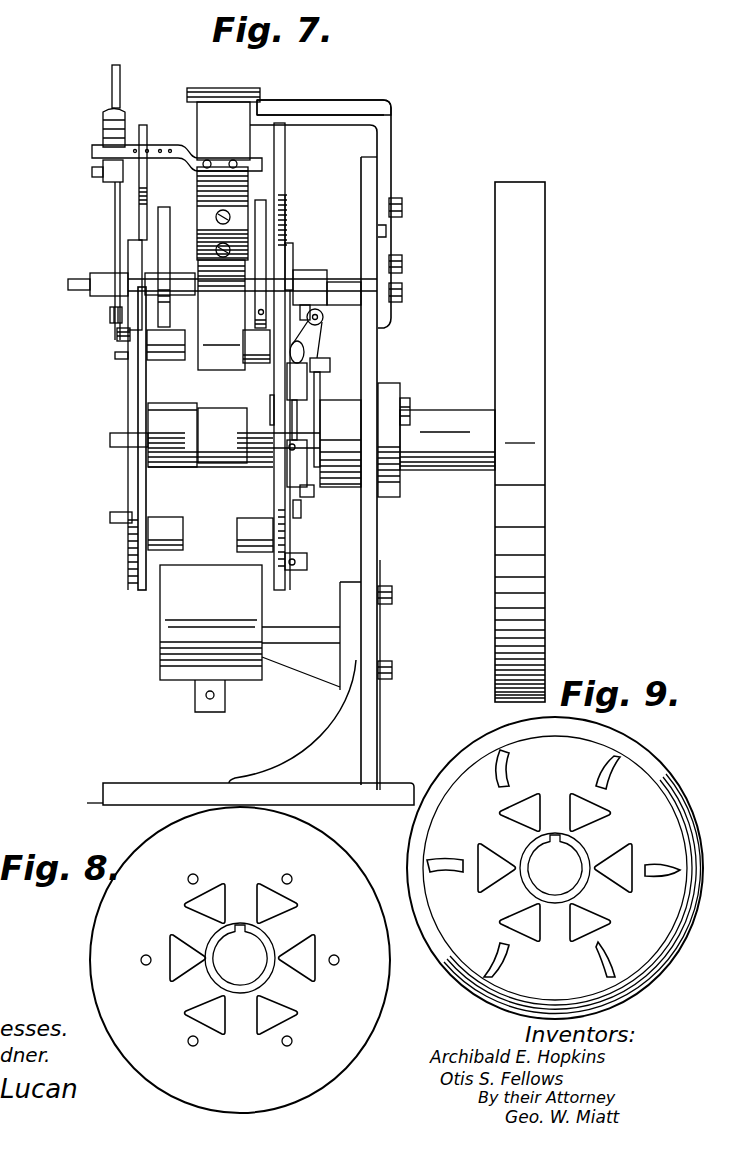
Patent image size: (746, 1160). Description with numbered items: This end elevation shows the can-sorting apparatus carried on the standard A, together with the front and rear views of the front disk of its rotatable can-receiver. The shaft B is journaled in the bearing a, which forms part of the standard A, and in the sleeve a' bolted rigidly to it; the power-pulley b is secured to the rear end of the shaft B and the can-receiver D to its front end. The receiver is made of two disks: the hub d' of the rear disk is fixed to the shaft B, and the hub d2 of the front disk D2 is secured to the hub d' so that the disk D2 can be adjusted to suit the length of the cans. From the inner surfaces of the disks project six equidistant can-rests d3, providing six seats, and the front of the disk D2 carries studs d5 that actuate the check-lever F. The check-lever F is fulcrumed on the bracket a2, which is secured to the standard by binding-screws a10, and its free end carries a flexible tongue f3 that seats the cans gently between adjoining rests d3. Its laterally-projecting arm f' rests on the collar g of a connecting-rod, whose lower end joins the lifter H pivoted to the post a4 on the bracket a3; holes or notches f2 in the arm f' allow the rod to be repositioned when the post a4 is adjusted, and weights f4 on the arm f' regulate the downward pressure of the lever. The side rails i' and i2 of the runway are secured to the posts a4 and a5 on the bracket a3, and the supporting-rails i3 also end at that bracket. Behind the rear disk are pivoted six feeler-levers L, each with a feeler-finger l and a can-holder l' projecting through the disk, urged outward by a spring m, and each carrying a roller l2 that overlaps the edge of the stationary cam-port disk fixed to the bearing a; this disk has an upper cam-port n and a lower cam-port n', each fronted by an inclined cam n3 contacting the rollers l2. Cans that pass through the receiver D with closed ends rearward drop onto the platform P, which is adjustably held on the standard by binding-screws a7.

In FIG. 7, the bearing a is at (250, 445).
In FIG. 7, the sleeve a' is at (321, 443).
In FIG. 7, the bracket a2 is at (324, 101).
In FIG. 7, the bracket a3 is at (253, 289).
In FIG. 7, the post a4 is at (138, 251).
In FIG. 7, the post a5 is at (306, 281).
In FIG. 7, the binding-screws a7 is at (396, 631).
In FIG. 7, the binding-screws a10 is at (408, 250).
In FIG. 7, the standard A is at (250, 693).
In FIG. 7, the power-pulley b is at (520, 442).
In FIG. 7, the shaft B is at (135, 432).
In FIG. 7, the can-receiver D is at (112, 438).
In FIG. 7, the front disk D2 is at (266, 486).
In FIG. 8, the front disk D2 is at (318, 1012).
In FIG. 9, the front disk D2 is at (497, 812).
In FIG. 7, the hub d' is at (222, 435).
In FIG. 7, the hub d2 is at (172, 397).
In FIG. 7, the can-rests d3 is at (210, 441).
In FIG. 9, the can-rests d3 is at (553, 863).
In FIG. 7, the studs d5 is at (115, 360).
In FIG. 8, the studs d5 is at (303, 880).
In FIG. 7, the check-lever F is at (223, 174).
In FIG. 7, the laterally-projecting arm f' is at (164, 156).
In FIG. 7, the holes or notches f2 is at (163, 136).
In FIG. 7, the flexible tongue f3 is at (221, 315).
In FIG. 7, the weights f4 is at (99, 106).
In FIG. 7, the collar g is at (104, 250).
In FIG. 7, the lifter H is at (108, 338).
In FIG. 7, the side rail i' is at (286, 356).
In FIG. 7, the side rail i2 is at (144, 227).
In FIG. 7, the supporting-rails i3 is at (212, 260).
In FIG. 7, the feeler-levers L is at (307, 439).
In FIG. 7, the feeler-finger l is at (278, 436).
In FIG. 7, the can bearing or holder l' is at (254, 407).
In FIG. 7, the roller l2 is at (330, 360).
In FIG. 7, the spring m is at (314, 490).
In FIG. 7, the upper cam-port n is at (331, 419).
In FIG. 7, the lower cam-port n' is at (314, 517).
In FIG. 7, the inclined cam or guide n3 is at (322, 453).
In FIG. 7, the platform P is at (211, 638).